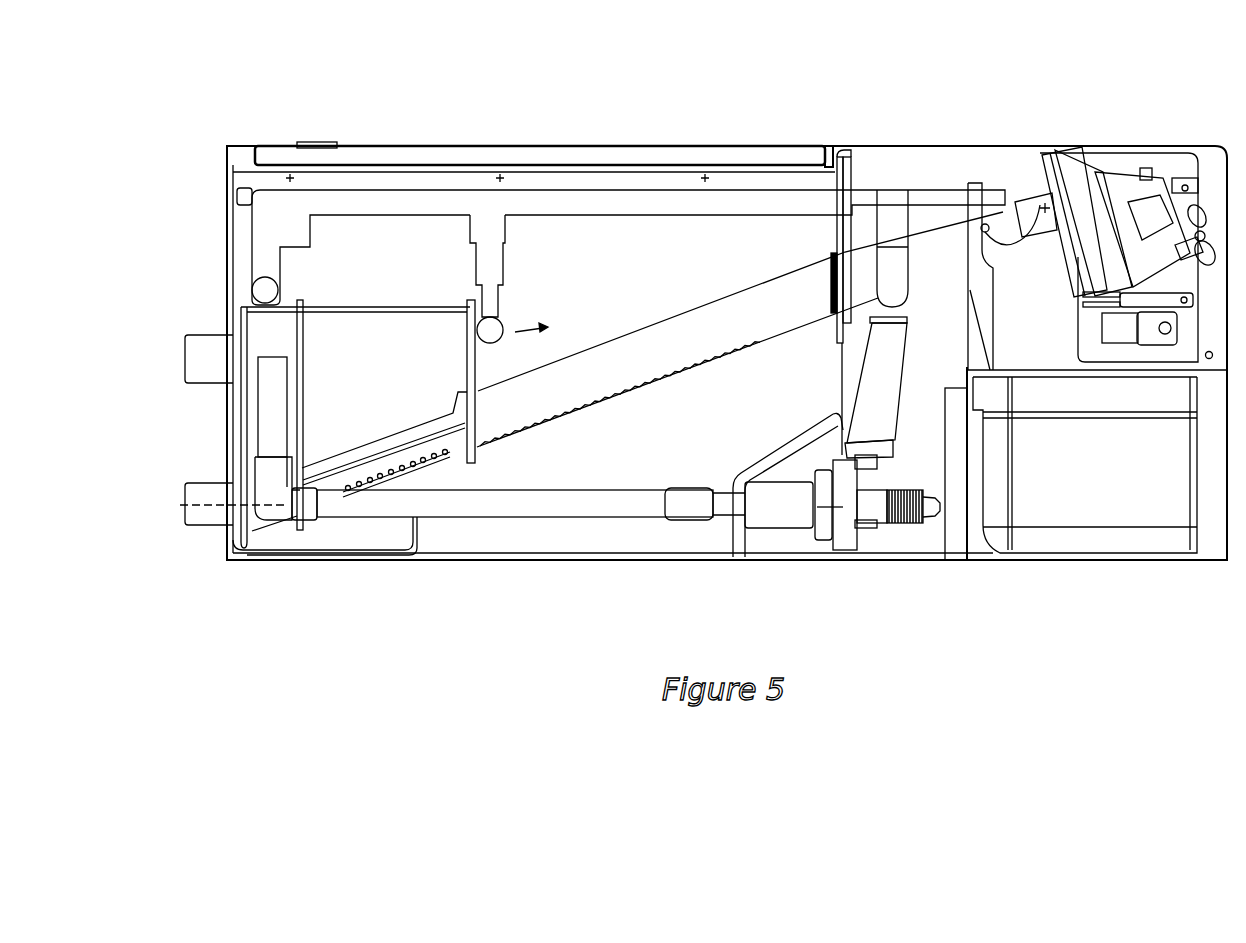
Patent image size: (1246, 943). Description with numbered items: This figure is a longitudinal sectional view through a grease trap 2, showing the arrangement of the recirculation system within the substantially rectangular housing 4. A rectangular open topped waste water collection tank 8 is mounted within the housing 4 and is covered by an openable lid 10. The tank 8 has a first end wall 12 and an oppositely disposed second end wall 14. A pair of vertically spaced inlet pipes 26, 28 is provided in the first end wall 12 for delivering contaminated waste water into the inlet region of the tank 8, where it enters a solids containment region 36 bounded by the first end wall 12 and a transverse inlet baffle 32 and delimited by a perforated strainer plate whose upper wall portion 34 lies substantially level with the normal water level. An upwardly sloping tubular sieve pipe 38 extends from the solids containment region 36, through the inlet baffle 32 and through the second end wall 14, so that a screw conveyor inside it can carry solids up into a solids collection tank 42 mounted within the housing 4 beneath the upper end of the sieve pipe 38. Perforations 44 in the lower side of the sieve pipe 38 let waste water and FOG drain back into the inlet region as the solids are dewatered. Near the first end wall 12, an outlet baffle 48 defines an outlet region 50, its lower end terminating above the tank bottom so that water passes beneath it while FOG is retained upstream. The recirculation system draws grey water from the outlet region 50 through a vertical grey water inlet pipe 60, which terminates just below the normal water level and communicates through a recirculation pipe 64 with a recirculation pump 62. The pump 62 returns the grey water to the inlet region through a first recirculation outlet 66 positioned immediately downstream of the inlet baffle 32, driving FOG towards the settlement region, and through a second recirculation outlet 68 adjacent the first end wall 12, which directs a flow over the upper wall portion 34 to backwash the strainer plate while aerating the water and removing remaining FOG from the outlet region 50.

The grease trap 2 is at (893, 59).
The housing 4 is at (1022, 152).
The waste water collection tank 8 is at (278, 553).
The lid 10 is at (520, 146).
The first end wall 12 is at (228, 206).
The second end wall 14 is at (852, 180).
The inlet pipe 26 is at (204, 368).
The inlet pipe 28 is at (197, 517).
The inlet baffle 32 is at (468, 468).
The upper wall portion 34 is at (355, 305).
The solids containment region 36 is at (398, 380).
The tubular sieve pipe 38 is at (693, 317).
The solids collection tank 42 is at (1093, 505).
The perforations 44 is at (542, 427).
The outlet baffle 48 is at (300, 528).
The outlet region 50 is at (260, 328).
The grey water inlet pipe 60 is at (267, 382).
The recirculation pump 62 is at (579, 500).
The recirculation pipe 64 is at (870, 523).
The first recirculation outlet 66 is at (495, 328).
The second recirculation outlet 68 is at (258, 286).